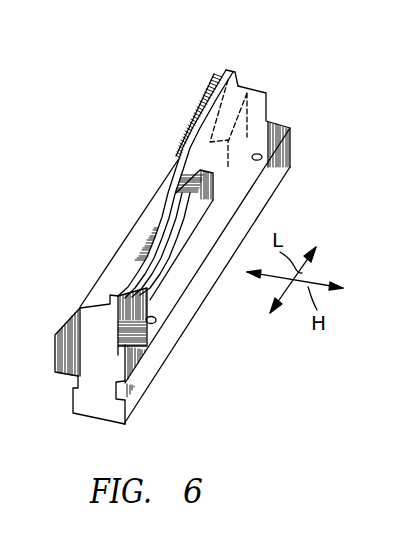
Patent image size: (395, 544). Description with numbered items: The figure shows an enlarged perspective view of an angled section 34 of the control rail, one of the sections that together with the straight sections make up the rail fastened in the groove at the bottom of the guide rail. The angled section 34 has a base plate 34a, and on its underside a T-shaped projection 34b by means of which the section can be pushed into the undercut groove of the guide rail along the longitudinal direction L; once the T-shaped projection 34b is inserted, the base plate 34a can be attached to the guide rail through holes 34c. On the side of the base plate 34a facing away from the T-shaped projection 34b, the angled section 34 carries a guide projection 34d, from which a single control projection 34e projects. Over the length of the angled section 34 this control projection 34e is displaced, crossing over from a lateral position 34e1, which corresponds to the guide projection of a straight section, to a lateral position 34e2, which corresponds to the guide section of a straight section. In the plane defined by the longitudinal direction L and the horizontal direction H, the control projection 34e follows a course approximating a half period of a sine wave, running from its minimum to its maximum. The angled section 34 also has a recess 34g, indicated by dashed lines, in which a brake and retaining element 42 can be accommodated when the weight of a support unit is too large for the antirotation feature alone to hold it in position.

The angled section 34 is at (152, 75).
The base plate 34a is at (132, 384).
The T-shaped projection 34b is at (93, 410).
The holes 34c is at (182, 330).
The guide projection 34d is at (90, 317).
The control projection 34e is at (180, 157).
The lateral position 34e1 is at (120, 290).
The lateral position 34e2 is at (226, 70).
The recess 34g is at (262, 108).
The brake and retaining element 42 is at (252, 98).